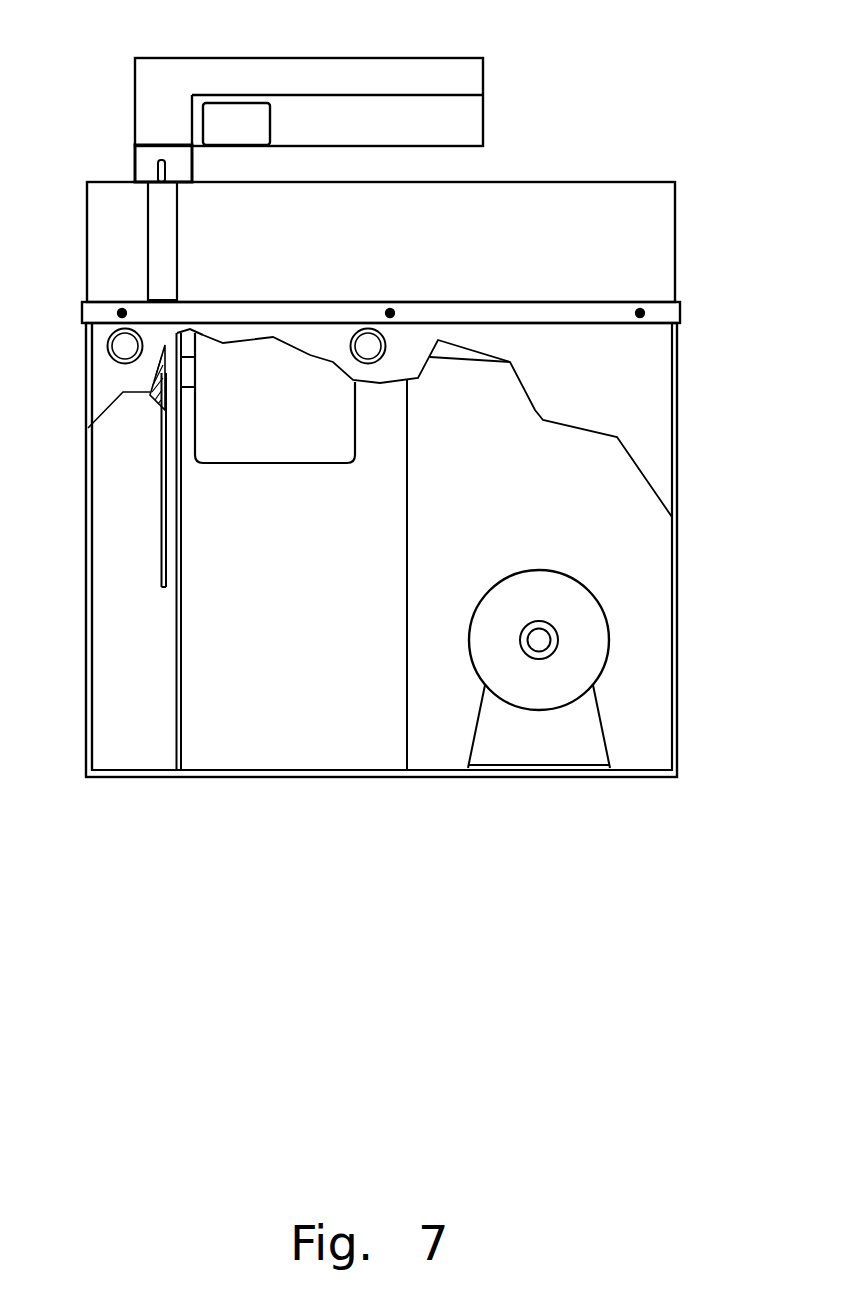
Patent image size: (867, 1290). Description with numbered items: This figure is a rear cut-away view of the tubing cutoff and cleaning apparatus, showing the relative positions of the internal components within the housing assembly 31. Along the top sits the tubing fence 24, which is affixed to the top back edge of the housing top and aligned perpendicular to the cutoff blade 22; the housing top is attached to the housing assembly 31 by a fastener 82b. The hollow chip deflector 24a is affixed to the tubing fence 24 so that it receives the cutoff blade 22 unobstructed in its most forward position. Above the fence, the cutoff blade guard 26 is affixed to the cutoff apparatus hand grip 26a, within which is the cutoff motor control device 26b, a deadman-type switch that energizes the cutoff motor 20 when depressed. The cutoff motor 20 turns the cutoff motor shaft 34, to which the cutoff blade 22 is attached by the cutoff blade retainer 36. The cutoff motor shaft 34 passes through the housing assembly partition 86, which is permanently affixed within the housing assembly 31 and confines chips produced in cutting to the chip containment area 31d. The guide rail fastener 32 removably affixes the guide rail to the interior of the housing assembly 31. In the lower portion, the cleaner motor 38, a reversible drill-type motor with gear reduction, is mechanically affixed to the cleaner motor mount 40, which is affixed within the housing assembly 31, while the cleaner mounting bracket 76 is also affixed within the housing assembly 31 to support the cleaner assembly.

The cutoff motor 20 is at (300, 445).
The cutoff blade 22 is at (161, 555).
The tubing fence 24 is at (573, 232).
The chip deflector 24a is at (163, 240).
The cutoff blade guard 26 is at (133, 163).
The cutoff apparatus hand grip 26a is at (400, 77).
The cutoff motor control device 26b is at (247, 132).
The housing assembly 31 is at (652, 353).
The chip containment area 31d is at (125, 748).
The guide rail fastener 32 is at (127, 347).
The cutoff motor shaft 34 is at (187, 372).
The cutoff blade retainer 36 is at (155, 375).
The cleaner motor 38 is at (512, 600).
The cleaner motor mount 40 is at (492, 725).
The cleaner mounting bracket 76 is at (653, 547).
The fastener for housing assembly top 82b is at (121, 310).
The housing assembly partition 86 is at (180, 633).